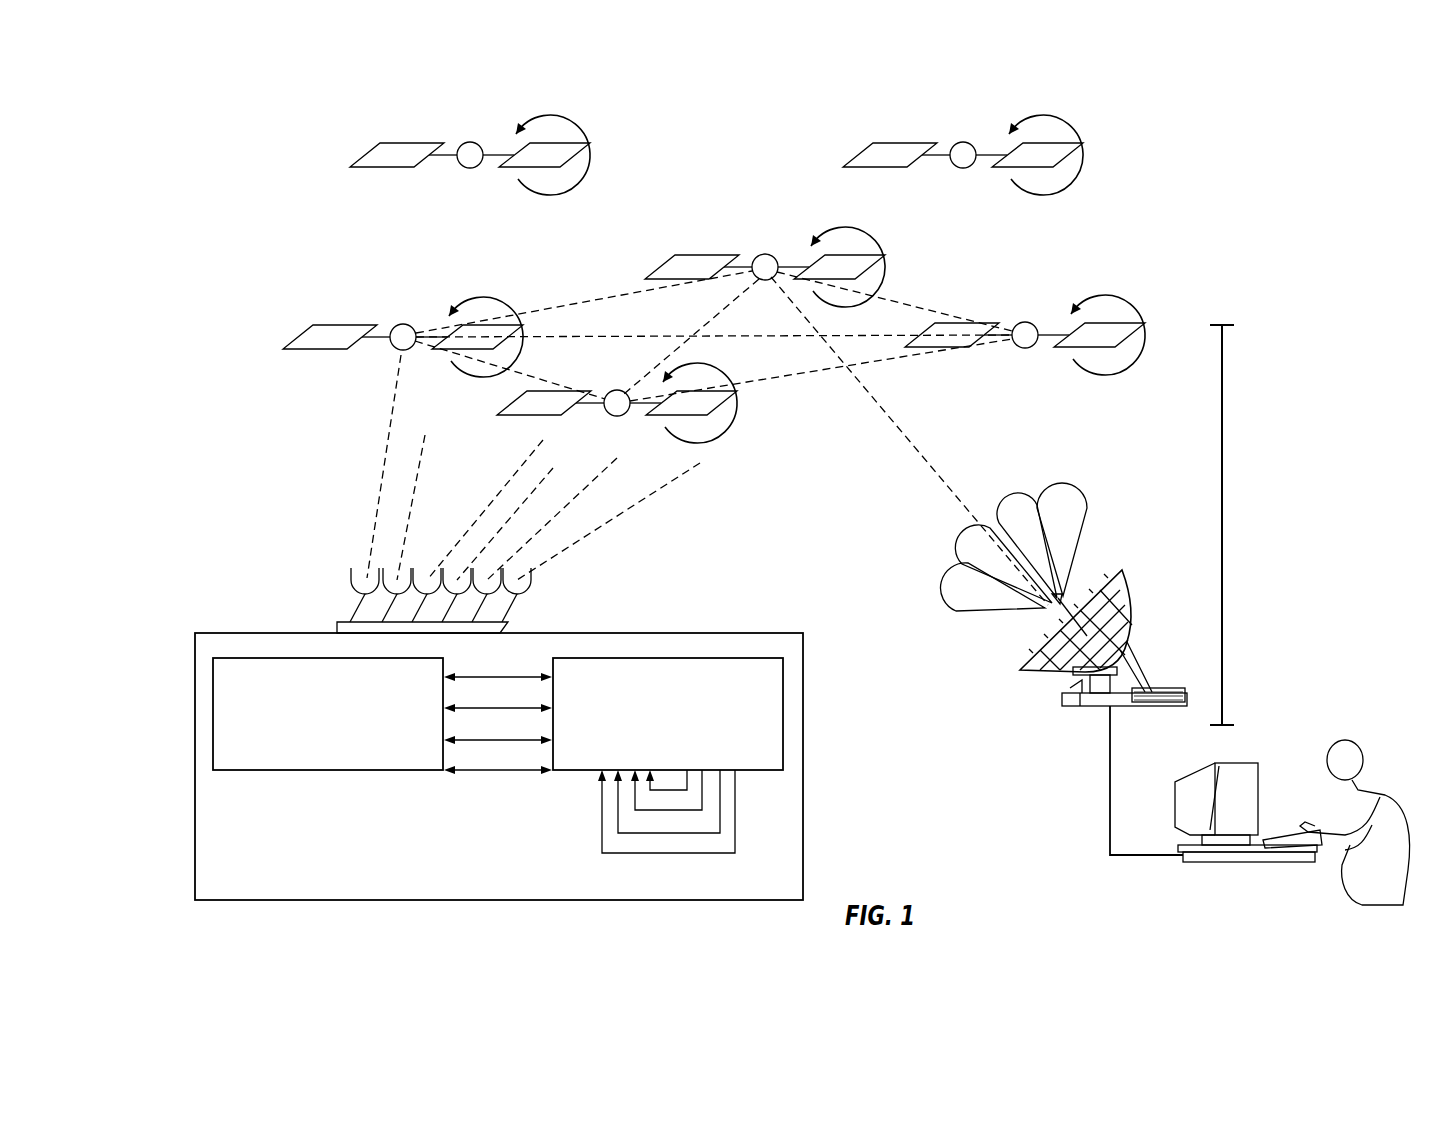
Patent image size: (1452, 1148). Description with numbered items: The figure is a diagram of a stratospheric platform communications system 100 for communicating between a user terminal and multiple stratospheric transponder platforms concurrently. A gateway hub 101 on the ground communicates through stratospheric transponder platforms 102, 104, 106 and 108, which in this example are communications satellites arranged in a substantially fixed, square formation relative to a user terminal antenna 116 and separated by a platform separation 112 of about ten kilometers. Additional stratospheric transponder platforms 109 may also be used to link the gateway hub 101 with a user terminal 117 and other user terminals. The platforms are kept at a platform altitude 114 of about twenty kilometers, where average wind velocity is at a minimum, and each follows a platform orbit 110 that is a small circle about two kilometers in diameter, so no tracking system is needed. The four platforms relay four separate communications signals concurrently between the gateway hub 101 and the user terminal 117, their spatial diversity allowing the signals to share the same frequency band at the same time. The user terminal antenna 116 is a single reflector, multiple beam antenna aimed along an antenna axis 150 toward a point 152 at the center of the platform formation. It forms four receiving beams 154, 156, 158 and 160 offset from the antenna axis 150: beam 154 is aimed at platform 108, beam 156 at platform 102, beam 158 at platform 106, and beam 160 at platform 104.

The stratospheric platform communications system 100 is at (1278, 206).
The gateway hub 101 is at (624, 632).
The stratospheric transponder platform 102 is at (338, 325).
The stratospheric transponder platform 104 is at (698, 254).
The stratospheric transponder platform 106 is at (950, 320).
The stratospheric transponder platform 108 is at (522, 420).
The additional stratospheric transponder platforms 109 is at (405, 141).
The platform orbit 110 is at (565, 116).
The platform separation 112 is at (843, 367).
The platform altitude 114 is at (1224, 384).
The user terminal antenna 116 is at (1118, 572).
The user terminal 117 is at (1238, 763).
The antenna axis 150 is at (875, 471).
The point at the center of the formation 152 is at (692, 336).
The receiving beam 154 is at (935, 582).
The receiving beam 156 is at (957, 531).
The receiving beam 158 is at (1005, 497).
The receiving beam 160 is at (1064, 484).